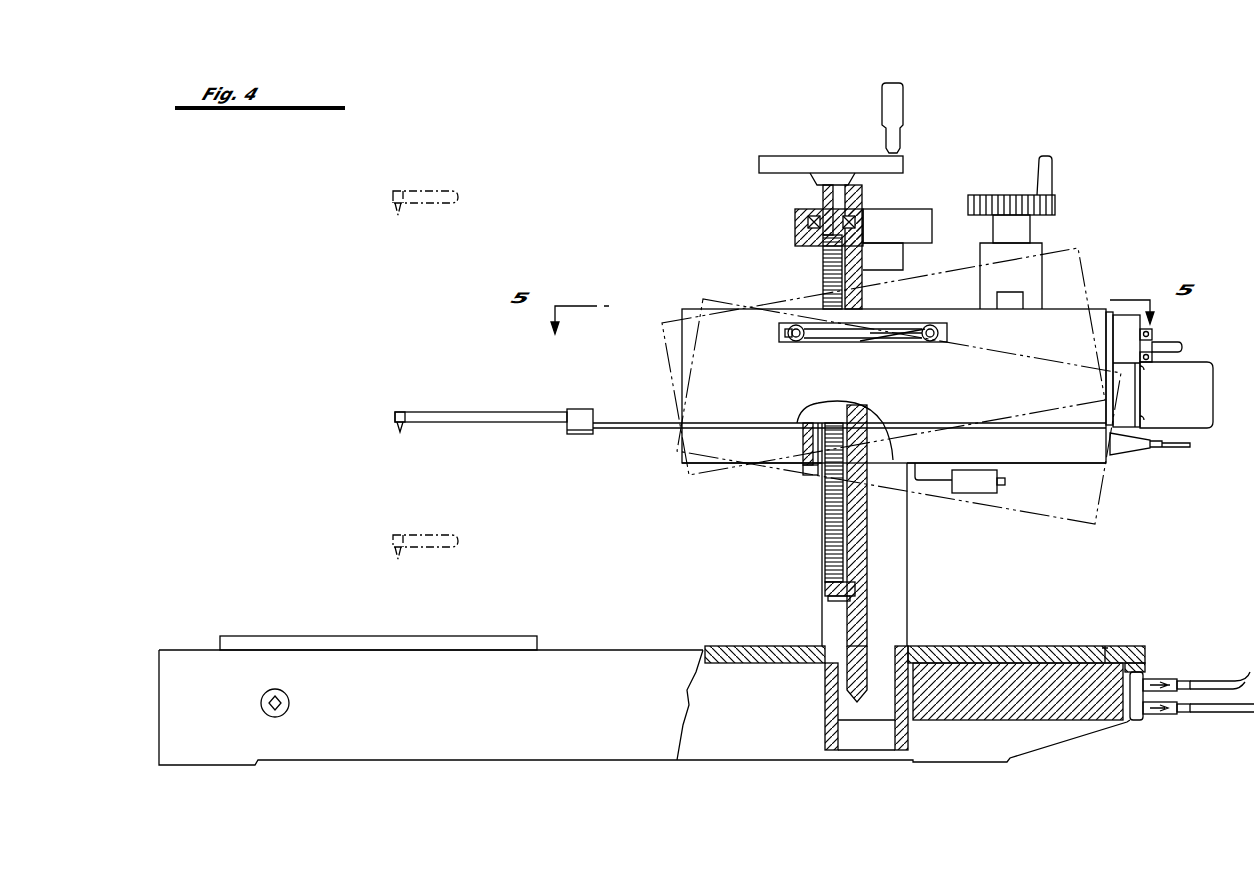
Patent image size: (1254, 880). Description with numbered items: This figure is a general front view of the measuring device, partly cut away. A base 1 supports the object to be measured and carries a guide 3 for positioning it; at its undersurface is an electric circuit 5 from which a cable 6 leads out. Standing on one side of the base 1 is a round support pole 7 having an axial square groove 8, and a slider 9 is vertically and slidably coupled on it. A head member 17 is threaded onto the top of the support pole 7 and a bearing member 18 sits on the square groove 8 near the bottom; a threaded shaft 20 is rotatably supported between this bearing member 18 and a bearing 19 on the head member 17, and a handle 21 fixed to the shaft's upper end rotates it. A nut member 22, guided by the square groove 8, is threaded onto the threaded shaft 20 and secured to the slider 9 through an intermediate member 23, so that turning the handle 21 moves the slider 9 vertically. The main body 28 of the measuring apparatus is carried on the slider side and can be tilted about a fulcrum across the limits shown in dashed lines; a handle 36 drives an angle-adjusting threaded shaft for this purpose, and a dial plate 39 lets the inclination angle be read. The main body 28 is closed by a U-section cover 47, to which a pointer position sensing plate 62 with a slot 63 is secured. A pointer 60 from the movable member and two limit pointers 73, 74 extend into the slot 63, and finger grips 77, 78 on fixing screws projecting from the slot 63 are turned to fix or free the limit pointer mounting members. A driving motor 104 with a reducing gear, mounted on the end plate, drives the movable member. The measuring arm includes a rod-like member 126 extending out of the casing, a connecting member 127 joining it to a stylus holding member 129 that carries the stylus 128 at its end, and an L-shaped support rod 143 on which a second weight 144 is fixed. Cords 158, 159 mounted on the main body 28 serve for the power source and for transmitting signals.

The base 1 is at (603, 653).
The guide 3 is at (422, 640).
The electric circuit 5 is at (1147, 665).
The cable 6 is at (1230, 683).
The support pole 7 is at (895, 582).
The square groove 8 is at (823, 290).
The slider 9 is at (828, 420).
The head member 17 is at (903, 208).
The bearing member 18 is at (822, 592).
The bearing 19 is at (797, 235).
The threaded shaft 20 is at (825, 552).
The handle 21 is at (790, 155).
The nut member 22 is at (805, 470).
The intermediate member 23 is at (803, 440).
The main body of the measuring apparatus 28 is at (1085, 306).
The handle 36 is at (1055, 205).
The dial plate 39 is at (1035, 285).
The cover 47 is at (1113, 315).
The pointer 60 is at (878, 345).
The pointer position sensing plate 62 is at (928, 332).
The slot 63 is at (900, 330).
The limit pointer 73 is at (812, 345).
The limit pointer 74 is at (917, 346).
The finger grip 77 is at (795, 345).
The finger grip 78 is at (943, 345).
The driving motor 104 is at (1195, 368).
The rod-like member 126 is at (643, 430).
The connecting member 127 is at (580, 428).
The stylus 128 is at (404, 428).
The stylus holding member 129 is at (515, 425).
The support rod 143 is at (935, 487).
The second weight 144 is at (1003, 490).
The cord 158 is at (1180, 345).
The cord 159 is at (1170, 455).